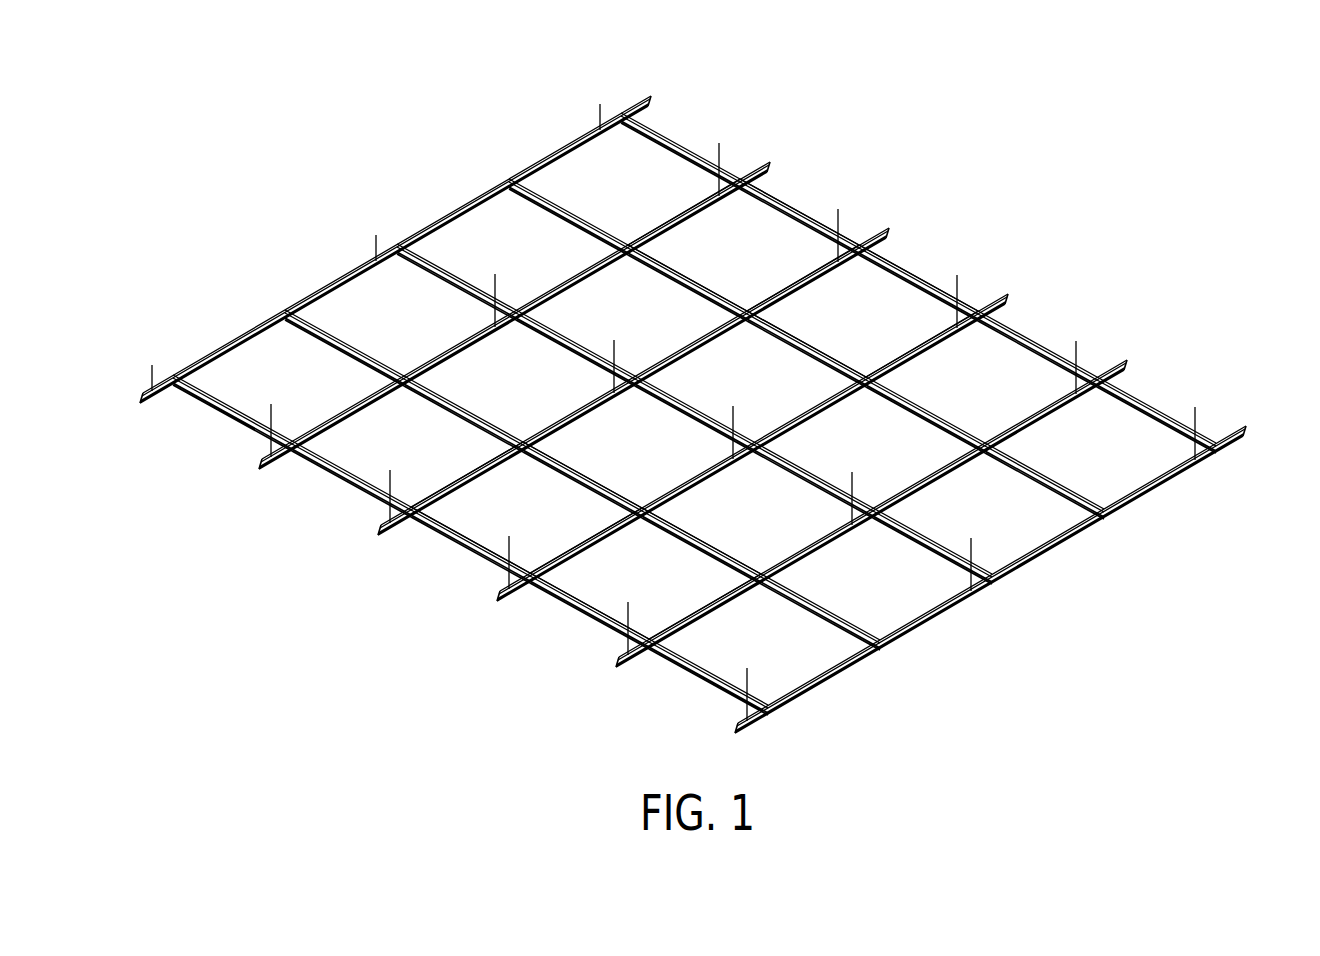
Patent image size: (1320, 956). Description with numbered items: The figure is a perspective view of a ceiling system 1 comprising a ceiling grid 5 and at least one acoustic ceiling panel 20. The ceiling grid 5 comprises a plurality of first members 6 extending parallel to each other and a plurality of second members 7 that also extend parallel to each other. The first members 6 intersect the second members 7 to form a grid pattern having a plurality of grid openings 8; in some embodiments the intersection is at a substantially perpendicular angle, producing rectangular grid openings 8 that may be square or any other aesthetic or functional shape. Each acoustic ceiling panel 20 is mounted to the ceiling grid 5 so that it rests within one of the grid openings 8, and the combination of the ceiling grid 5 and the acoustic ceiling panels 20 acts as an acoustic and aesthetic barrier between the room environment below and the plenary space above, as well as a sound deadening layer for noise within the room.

The ceiling system 1 is at (1232, 159).
The ceiling grid 5 is at (566, 263).
The first members 6 is at (1050, 483).
The second members 7 is at (427, 360).
The grid openings 8 is at (928, 312).
The acoustic ceiling panel 20 is at (603, 590).